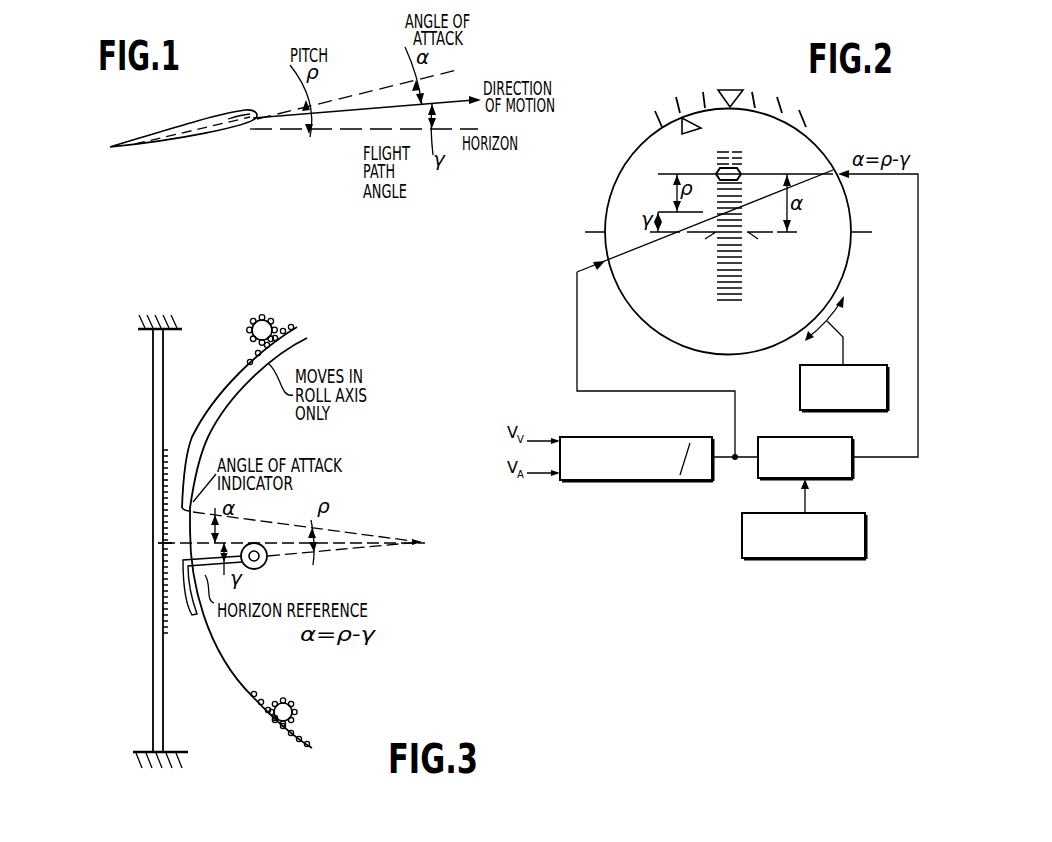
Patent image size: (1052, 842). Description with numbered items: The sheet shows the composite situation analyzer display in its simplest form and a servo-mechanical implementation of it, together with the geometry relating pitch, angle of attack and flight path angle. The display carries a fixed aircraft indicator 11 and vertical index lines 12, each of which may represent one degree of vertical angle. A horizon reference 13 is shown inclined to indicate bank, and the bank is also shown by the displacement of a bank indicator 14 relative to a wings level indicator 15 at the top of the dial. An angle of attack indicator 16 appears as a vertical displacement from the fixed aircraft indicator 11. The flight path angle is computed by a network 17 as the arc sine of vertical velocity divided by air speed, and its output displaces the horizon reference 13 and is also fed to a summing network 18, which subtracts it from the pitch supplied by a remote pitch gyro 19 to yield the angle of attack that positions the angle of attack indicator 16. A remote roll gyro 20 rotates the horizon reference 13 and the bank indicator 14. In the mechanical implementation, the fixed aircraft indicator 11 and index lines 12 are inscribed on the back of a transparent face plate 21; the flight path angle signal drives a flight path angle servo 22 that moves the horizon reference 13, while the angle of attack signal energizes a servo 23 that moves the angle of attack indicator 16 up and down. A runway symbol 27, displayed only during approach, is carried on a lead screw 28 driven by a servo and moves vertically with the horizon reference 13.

In FIG. 2, the fixed aircraft indicator 11 is at (762, 233).
In FIG. 3, the fixed aircraft indicator 11 is at (154, 543).
In FIG. 2, the vertical index lines 12 is at (714, 277).
In FIG. 3, the vertical index lines 12 is at (156, 593).
In FIG. 2, the horizon reference 13 is at (633, 251).
In FIG. 2, the bank indicator 14 is at (700, 129).
In FIG. 2, the wings level indicator 15 is at (733, 88).
In FIG. 2, the angle of attack indicator 16 is at (738, 171).
In FIG. 3, the angle of attack indicator 16 is at (183, 508).
In FIG. 2, the network 17 is at (687, 436).
In FIG. 2, the summing network 18 is at (782, 436).
In FIG. 2, the pitch gyro 19 is at (767, 512).
In FIG. 2, the roll gyro 20 is at (872, 365).
In FIG. 3, the transparent face plate 21 is at (162, 674).
In FIG. 3, the flight path angle servo 22 is at (311, 705).
In FIG. 3, the angle of attack servo 23 is at (293, 305).
In FIG. 3, the runway symbol 27 is at (188, 604).
In FIG. 3, the lead screw 28 is at (266, 566).